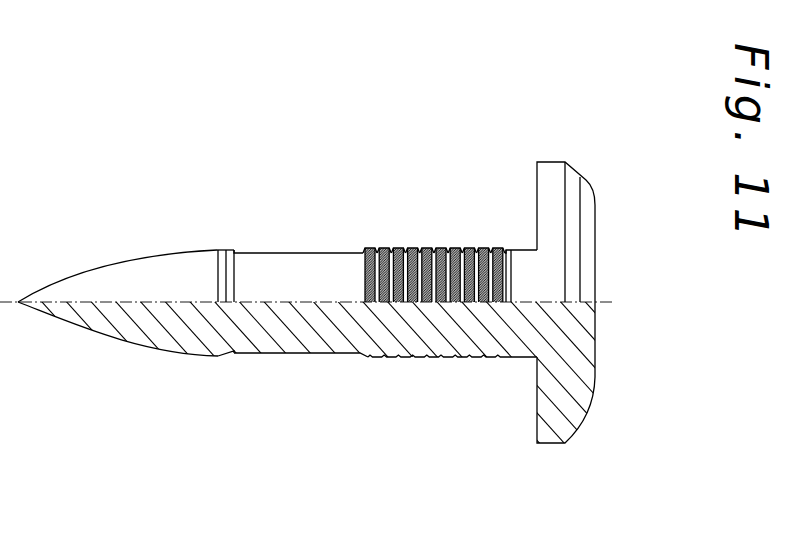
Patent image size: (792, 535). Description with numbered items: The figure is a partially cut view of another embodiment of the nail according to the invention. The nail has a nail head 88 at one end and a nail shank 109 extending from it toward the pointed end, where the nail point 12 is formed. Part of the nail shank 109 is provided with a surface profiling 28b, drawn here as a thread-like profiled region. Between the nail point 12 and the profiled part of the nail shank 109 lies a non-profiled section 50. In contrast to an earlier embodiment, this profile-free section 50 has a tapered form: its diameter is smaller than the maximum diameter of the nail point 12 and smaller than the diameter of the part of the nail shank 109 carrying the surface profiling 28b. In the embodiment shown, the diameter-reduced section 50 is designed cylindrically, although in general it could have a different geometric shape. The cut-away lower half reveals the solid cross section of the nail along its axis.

The nail head 88 is at (622, 399).
The non-profiled section 50 is at (306, 267).
The nail point 12 is at (72, 377).
The surface profiling 28b is at (360, 412).
The nail shank 109 is at (454, 410).